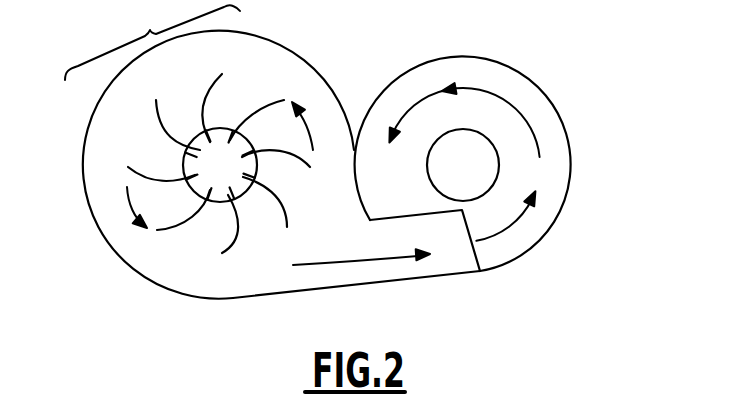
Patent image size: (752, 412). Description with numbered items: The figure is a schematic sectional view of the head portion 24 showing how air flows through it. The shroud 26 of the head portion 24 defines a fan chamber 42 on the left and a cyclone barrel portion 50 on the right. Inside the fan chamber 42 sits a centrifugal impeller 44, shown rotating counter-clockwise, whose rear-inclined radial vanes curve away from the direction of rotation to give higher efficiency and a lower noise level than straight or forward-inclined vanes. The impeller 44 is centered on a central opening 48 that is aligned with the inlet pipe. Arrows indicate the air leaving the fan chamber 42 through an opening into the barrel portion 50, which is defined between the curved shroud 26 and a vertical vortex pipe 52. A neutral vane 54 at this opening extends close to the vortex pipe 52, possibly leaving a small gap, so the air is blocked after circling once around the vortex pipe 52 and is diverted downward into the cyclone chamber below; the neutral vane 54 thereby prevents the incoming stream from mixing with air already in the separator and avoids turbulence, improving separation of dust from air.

The head portion 24 is at (152, 40).
The shroud 26 is at (192, 295).
The fan chamber 42 is at (300, 78).
The centrifugal impeller 44 is at (158, 124).
The central opening 48 is at (257, 167).
The cyclone barrel portion 50 is at (566, 171).
The vertical vortex pipe 52 is at (428, 183).
The neutral vane 54 is at (387, 223).